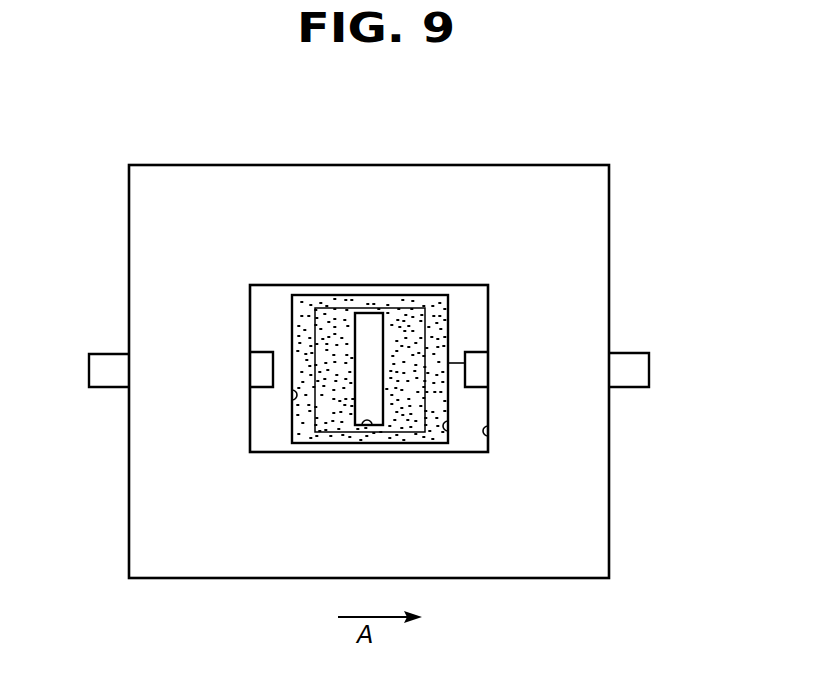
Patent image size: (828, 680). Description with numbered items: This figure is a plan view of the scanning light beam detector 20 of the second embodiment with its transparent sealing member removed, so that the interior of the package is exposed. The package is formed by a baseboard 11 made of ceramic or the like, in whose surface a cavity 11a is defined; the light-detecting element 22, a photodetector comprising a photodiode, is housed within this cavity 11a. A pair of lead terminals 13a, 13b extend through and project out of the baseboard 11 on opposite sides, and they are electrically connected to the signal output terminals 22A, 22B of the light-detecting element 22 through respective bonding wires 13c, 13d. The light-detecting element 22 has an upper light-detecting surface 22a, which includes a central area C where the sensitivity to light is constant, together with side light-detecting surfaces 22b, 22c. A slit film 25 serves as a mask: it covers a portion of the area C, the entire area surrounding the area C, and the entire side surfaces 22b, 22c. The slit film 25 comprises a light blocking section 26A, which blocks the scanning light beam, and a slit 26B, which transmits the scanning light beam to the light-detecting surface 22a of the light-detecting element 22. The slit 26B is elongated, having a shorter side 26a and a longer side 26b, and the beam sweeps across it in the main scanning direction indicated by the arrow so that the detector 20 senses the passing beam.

The baseboard 11 is at (565, 267).
The cavity 11a is at (490, 437).
The lead terminal 13a is at (112, 352).
The lead terminal 13b is at (640, 378).
The bonding wire 13c is at (282, 350).
The bonding wire 13d is at (453, 364).
The scanning light beam detector 20 is at (611, 328).
The light-detecting element 22 is at (447, 346).
The signal output terminal 22A is at (292, 316).
The signal output terminal 22B is at (450, 311).
The upper light-detecting surface 22a is at (375, 370).
The side light-detecting surface 22b is at (293, 398).
The side light-detecting surface 22c is at (442, 432).
The slit film 25 is at (313, 417).
The light blocking section 26A is at (337, 420).
The slit 26B is at (354, 393).
The shorter side 26a is at (365, 422).
The longer side 26b is at (382, 398).
The central area C is at (403, 330).